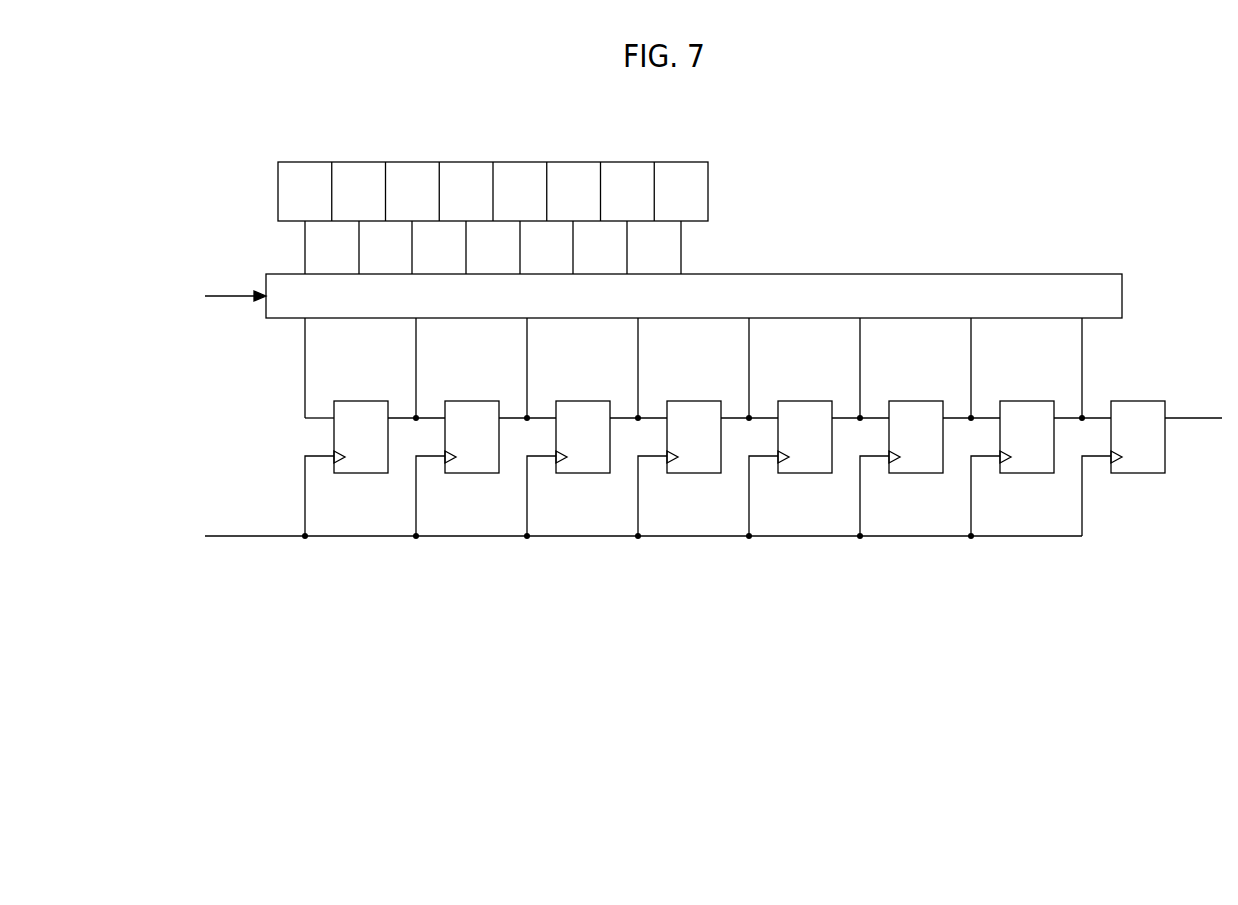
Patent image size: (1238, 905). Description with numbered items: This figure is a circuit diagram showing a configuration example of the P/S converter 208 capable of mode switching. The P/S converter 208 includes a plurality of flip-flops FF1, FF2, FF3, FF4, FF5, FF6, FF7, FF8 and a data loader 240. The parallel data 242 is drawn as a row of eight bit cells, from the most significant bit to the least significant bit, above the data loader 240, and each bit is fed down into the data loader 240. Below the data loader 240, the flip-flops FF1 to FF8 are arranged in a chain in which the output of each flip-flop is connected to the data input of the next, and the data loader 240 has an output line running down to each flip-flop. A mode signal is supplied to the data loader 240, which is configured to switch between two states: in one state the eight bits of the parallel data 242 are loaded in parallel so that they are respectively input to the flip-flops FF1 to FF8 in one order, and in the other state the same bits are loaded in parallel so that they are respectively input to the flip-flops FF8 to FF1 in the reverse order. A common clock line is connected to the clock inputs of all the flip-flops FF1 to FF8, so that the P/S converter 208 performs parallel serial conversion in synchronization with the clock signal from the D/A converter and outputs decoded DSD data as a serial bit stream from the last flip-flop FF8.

The P/S converter 208 is at (686, 632).
The data loader 240 is at (1123, 292).
The parallel data 242 is at (680, 160).
The flip-flop FF1 is at (354, 400).
The flip-flop FF2 is at (465, 400).
The flip-flop FF3 is at (576, 400).
The flip-flop FF4 is at (687, 400).
The flip-flop FF5 is at (798, 400).
The flip-flop FF6 is at (909, 400).
The flip-flop FF7 is at (1020, 400).
The flip-flop FF8 is at (1131, 400).